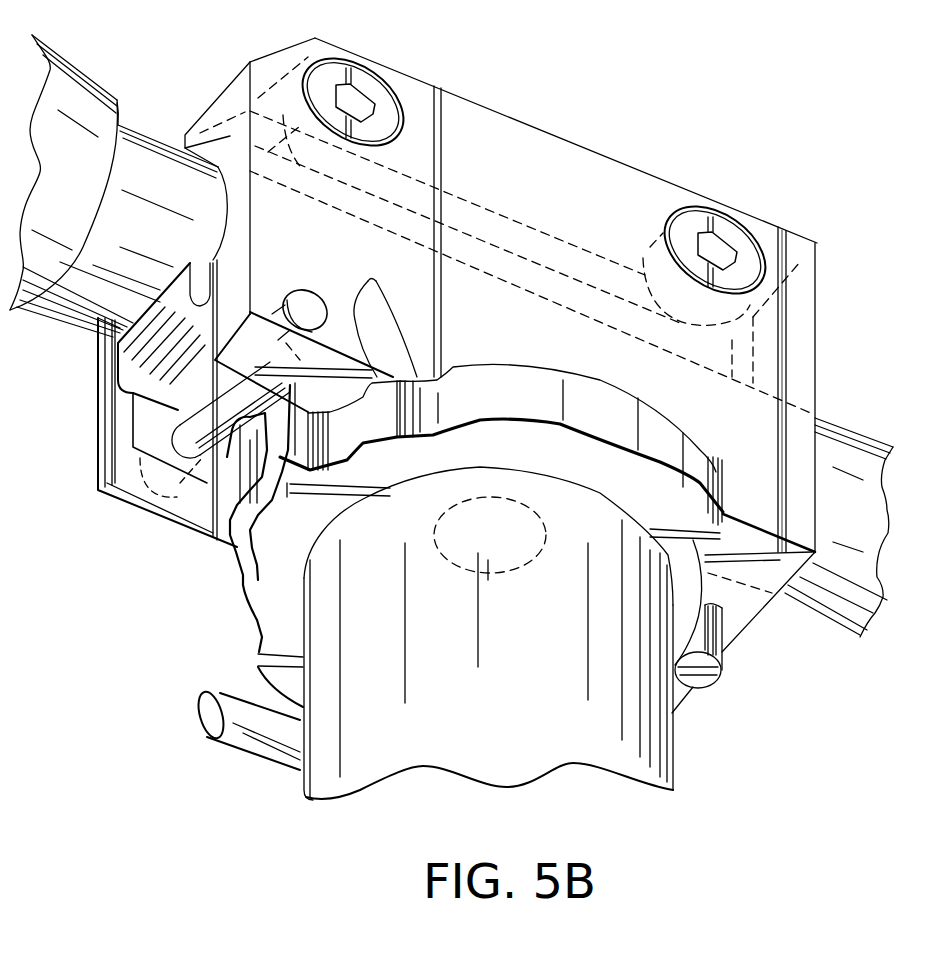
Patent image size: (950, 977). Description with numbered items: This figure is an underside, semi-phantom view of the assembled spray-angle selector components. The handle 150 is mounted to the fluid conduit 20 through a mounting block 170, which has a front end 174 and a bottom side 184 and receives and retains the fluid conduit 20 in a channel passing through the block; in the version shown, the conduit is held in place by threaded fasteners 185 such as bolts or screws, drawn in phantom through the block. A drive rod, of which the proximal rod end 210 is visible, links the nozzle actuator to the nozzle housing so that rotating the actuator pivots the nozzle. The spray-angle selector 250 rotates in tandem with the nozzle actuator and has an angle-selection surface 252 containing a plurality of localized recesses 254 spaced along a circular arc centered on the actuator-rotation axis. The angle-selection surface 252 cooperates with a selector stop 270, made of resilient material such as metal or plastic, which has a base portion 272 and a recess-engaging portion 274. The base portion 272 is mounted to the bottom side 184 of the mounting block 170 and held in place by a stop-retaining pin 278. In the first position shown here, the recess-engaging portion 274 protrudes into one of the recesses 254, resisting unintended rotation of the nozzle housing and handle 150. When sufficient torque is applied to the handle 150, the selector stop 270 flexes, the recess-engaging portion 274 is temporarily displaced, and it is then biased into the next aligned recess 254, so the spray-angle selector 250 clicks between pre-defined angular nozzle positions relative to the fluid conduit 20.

The fluid conduit 20 is at (837, 423).
The handle 150 is at (648, 725).
The mounting block 170 is at (770, 220).
The front end 174 is at (818, 310).
The bottom side 184 is at (737, 612).
The threaded fastener 185 is at (335, 78).
The proximal rod end 210 is at (245, 738).
The spray-angle selector 250 is at (535, 366).
The angle-selection surface 252 is at (368, 282).
The localized recesses 254 is at (430, 372).
The selector stop 270 is at (160, 378).
The base portion 272 is at (173, 350).
The recess-engaging portion 274 is at (252, 490).
The stop-retaining pin 278 is at (192, 437).